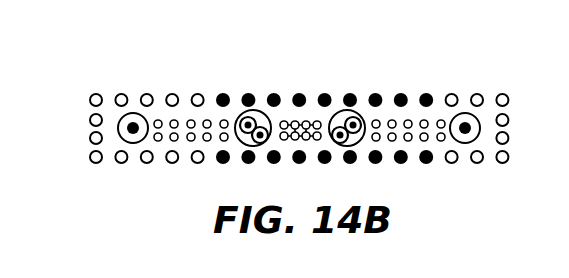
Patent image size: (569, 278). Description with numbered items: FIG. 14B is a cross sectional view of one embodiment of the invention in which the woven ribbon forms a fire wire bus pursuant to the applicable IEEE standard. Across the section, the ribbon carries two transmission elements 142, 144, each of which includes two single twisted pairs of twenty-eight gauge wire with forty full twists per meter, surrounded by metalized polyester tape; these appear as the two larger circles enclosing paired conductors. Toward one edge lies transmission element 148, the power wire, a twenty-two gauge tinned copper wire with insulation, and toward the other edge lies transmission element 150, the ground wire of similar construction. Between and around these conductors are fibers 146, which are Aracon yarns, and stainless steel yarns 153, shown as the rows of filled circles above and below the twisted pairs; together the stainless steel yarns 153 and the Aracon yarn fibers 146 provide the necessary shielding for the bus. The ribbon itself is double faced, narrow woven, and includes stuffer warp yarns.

The transmission element 142 is at (233, 114).
The transmission element 144 is at (358, 112).
The fibers 146 is at (287, 112).
The transmission element 148 is at (133, 112).
The transmission element 150 is at (474, 120).
The stainless steel yarns 153 is at (272, 94).